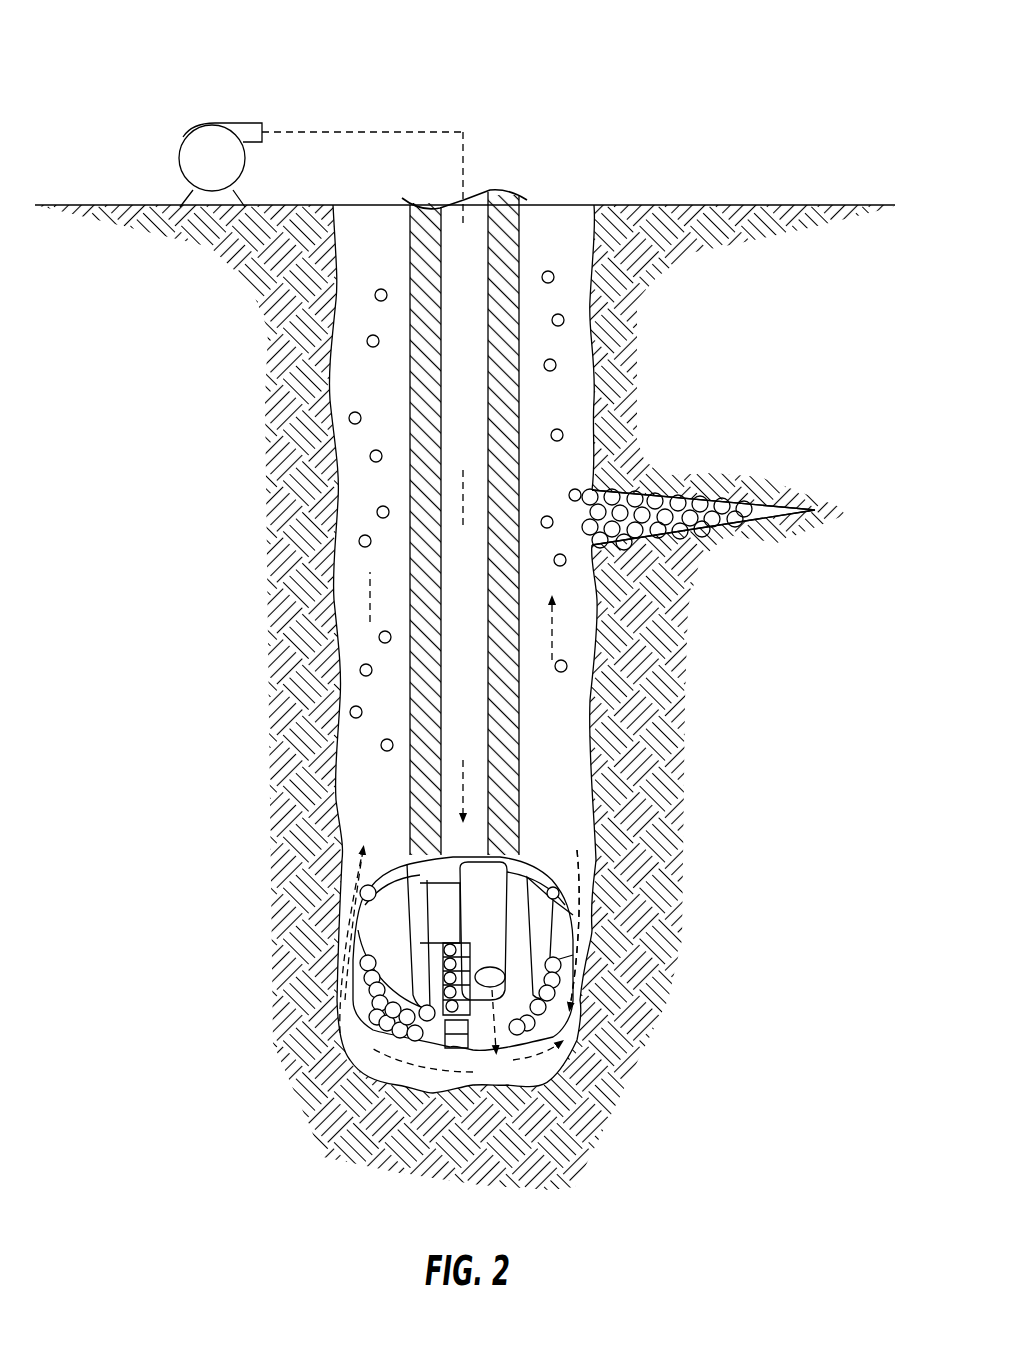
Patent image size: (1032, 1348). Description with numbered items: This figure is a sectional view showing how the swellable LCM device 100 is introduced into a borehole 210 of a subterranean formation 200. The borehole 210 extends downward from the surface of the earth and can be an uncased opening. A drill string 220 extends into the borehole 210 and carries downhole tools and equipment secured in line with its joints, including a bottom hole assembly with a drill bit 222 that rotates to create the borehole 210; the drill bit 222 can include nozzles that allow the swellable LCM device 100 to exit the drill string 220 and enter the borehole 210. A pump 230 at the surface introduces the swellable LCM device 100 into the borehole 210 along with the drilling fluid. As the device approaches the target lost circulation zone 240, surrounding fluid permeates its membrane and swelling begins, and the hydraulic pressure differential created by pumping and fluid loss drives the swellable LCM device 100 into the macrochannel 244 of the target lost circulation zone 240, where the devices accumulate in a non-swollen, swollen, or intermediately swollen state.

The subterranean formation 200 is at (778, 45).
The borehole 210 is at (574, 170).
The drill string 220 is at (522, 778).
The drill bit 222 is at (545, 1030).
The pump 230 is at (192, 152).
The target lost circulation zone 240 is at (850, 466).
The macrochannel 244 is at (728, 545).
The swellable LCM device 100 is at (564, 322).